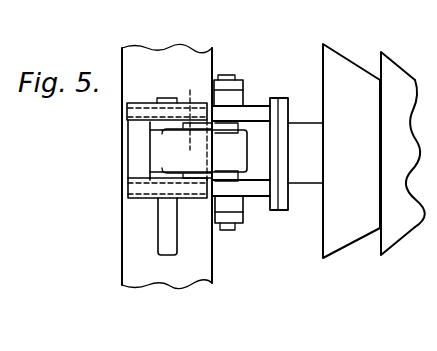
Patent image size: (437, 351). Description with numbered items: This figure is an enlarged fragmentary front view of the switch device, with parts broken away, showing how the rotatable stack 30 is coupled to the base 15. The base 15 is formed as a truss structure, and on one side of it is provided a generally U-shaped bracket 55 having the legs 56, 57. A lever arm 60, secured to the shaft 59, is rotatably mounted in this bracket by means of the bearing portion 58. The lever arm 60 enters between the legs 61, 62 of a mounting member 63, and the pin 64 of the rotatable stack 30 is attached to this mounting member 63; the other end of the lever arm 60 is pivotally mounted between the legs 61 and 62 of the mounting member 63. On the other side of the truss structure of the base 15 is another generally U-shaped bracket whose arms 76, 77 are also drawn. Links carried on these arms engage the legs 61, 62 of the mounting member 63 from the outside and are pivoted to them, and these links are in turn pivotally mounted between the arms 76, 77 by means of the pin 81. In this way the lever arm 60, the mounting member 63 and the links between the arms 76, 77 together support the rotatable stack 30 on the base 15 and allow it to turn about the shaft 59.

The base 15 is at (155, 275).
The rotatable stack 30 is at (353, 235).
The U-shaped bracket 55 is at (137, 142).
The leg 56 is at (133, 115).
The leg 57 is at (128, 190).
The bearing portion 58 is at (155, 162).
The shaft 59 is at (163, 237).
The lever arm 60 is at (190, 140).
The leg 61 is at (256, 112).
The leg 62 is at (250, 193).
The mounting member 63 is at (280, 210).
The pin 64 is at (300, 130).
The arm 76 is at (240, 78).
The arm 77 is at (240, 220).
The pin 81 is at (228, 231).